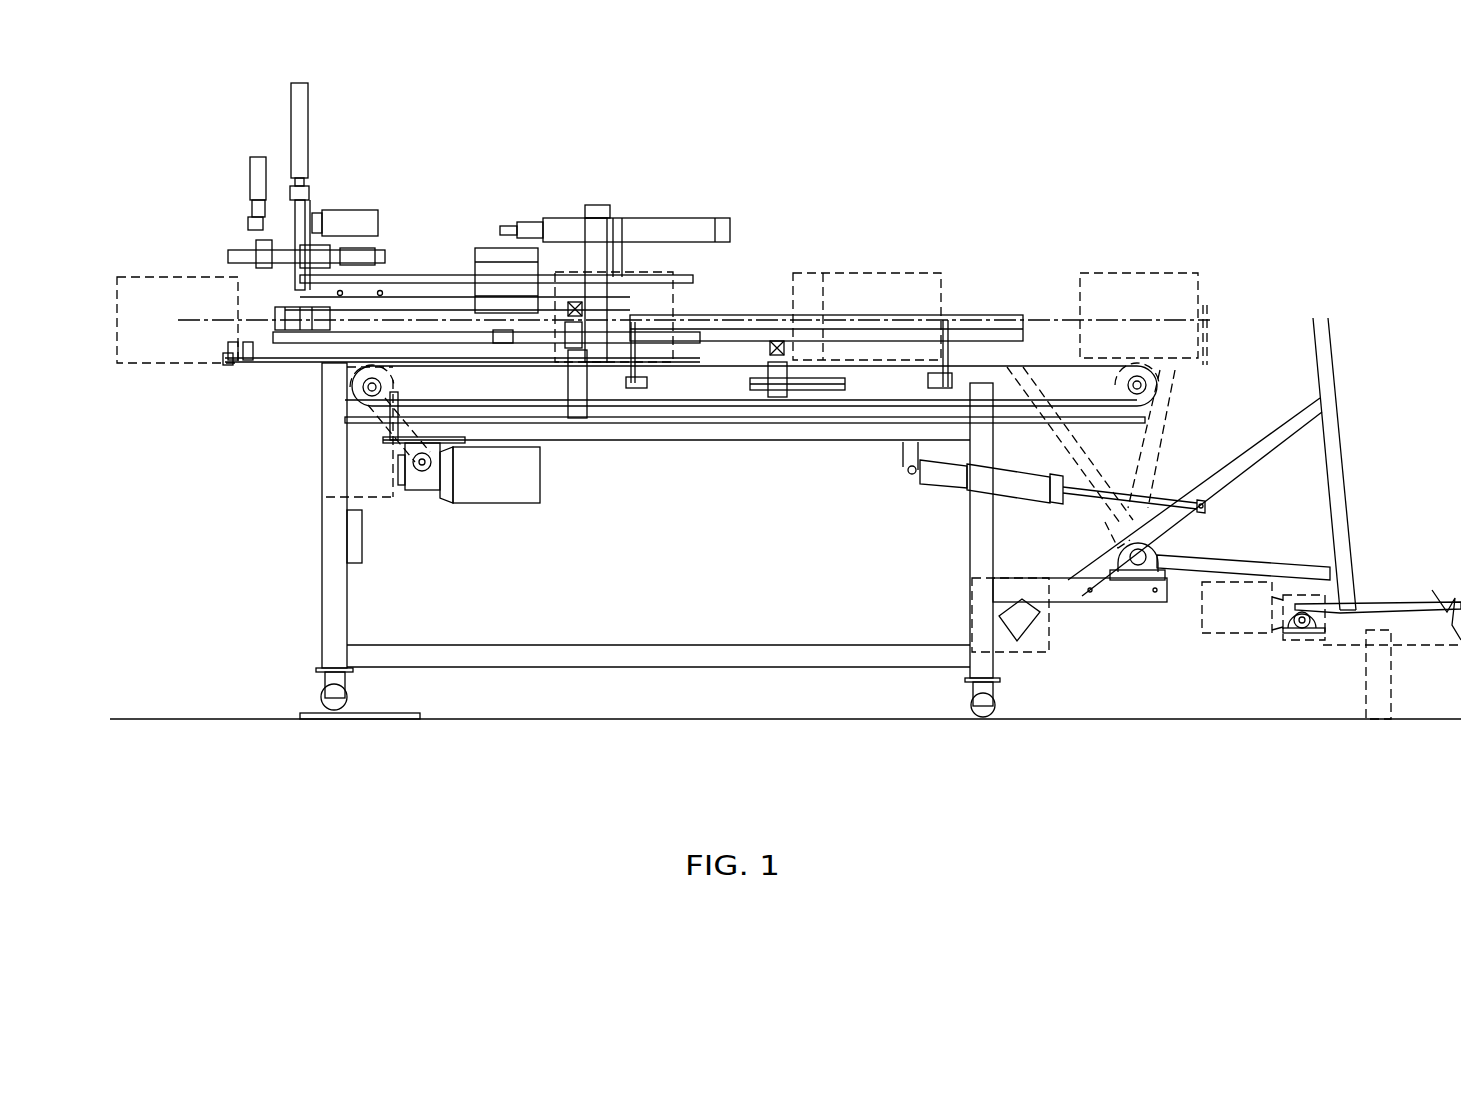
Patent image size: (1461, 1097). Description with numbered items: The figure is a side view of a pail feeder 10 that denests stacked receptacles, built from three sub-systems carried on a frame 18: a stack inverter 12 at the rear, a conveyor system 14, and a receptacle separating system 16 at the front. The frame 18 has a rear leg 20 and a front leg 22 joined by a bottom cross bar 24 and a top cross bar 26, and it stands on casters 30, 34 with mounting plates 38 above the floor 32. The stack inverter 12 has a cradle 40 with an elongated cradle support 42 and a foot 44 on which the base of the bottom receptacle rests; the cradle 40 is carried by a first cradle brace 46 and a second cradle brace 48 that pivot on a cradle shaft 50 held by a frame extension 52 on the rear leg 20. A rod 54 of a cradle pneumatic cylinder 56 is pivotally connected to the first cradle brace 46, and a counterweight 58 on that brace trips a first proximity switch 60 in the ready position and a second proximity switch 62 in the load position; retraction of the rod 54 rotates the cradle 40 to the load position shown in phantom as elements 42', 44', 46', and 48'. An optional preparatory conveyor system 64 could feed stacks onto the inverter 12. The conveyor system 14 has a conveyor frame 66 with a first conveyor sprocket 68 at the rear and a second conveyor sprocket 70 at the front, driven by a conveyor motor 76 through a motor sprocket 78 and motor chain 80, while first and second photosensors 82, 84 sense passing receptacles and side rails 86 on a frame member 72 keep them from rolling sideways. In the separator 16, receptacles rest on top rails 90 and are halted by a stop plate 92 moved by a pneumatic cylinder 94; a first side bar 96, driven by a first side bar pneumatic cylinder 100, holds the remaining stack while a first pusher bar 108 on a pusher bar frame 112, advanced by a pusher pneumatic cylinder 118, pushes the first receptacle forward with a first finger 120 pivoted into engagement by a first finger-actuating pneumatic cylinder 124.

The feeder 10 is at (830, 140).
The stack inverter 12 is at (1331, 288).
The conveyor system 14 is at (778, 248).
The receptacle separating system 16 is at (404, 186).
The frame 18 is at (700, 640).
The rear leg 20 is at (970, 532).
The front leg 22 is at (347, 622).
The bottom cross bar 24 is at (768, 671).
The top cross bar 26 is at (813, 442).
The rear caster 30 is at (972, 702).
The floor 32 is at (545, 718).
The caster wheel 34 is at (332, 705).
The caster mounting plate 38 is at (358, 708).
The cradle 40 is at (1341, 422).
The cradle support 42 is at (1378, 464).
The cradle support (load position) 42' is at (1173, 305).
The foot 44 is at (1378, 564).
The foot (load position) 44' is at (1252, 337).
The first cradle brace 46 is at (1195, 497).
The first cradle brace (load position) 46' is at (1070, 457).
The second cradle brace 48 is at (1243, 540).
The second cradle brace (load position) 48' is at (1180, 439).
The cradle shaft 50 is at (1158, 557).
The frame extension 52 is at (1070, 591).
The rod 54 is at (1068, 494).
The cradle pneumatic cylinder 56 is at (950, 493).
The counterweight 58 is at (1013, 644).
The first proximity switch 60 is at (1087, 584).
The second proximity switch 62 is at (1155, 584).
The preparatory conveyor system 64 is at (1415, 612).
The conveyor frame 66 is at (873, 384).
The first conveyor sprocket 68 is at (1137, 409).
The second conveyor sprocket 70 is at (352, 404).
The conveyor side frame 72 is at (713, 405).
The conveyor motor 76 is at (543, 482).
The motor sprocket 78 is at (418, 468).
The motor chain 80 is at (373, 412).
The first photosensor 82 is at (783, 350).
The second photosensor 84 is at (573, 302).
The side rails 86 is at (923, 328).
The top rails 90 is at (453, 283).
The stop plate 92 is at (303, 250).
The pneumatic cylinder 94 is at (253, 178).
The first side bar 96 is at (292, 280).
The first side bar pneumatic cylinder 100 is at (297, 123).
The first pusher bar 108 is at (412, 317).
The pusher bar frame 112 is at (476, 267).
The pusher pneumatic cylinder 118 is at (677, 228).
The first finger 120 is at (287, 307).
The first finger-actuating pneumatic cylinder 124 is at (303, 335).